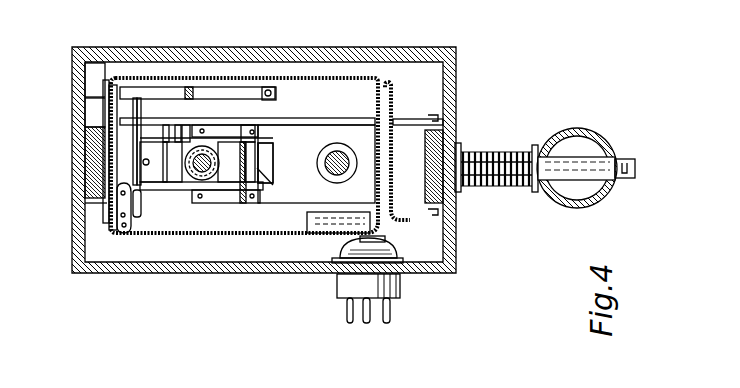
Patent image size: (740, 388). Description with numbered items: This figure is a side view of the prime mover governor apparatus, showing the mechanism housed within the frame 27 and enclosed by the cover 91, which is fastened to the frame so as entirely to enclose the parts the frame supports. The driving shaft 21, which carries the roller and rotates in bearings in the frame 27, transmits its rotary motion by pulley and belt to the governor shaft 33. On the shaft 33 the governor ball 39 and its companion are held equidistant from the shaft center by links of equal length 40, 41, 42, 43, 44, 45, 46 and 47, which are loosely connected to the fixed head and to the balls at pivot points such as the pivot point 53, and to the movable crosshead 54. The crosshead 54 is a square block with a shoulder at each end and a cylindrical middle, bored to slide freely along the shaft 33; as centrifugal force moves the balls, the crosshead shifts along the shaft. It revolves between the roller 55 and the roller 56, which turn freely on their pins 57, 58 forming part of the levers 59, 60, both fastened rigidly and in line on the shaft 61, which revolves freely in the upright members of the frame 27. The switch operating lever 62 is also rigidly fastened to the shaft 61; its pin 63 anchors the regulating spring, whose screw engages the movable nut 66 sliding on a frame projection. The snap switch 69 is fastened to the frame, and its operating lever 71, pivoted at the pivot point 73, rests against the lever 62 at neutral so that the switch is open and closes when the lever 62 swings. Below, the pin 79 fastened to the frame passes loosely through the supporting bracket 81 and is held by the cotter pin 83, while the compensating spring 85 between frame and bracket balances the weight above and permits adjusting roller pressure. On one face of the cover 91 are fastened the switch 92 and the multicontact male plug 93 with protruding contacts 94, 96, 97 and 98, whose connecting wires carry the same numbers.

The shaft 21 is at (326, 158).
The frame 27 is at (92, 160).
The shaft 33 is at (212, 160).
The governor ball 39 is at (274, 158).
The link 40 is at (150, 186).
The link 41 is at (163, 186).
The link 42 is at (228, 197).
The link 43 is at (241, 197).
The link 44 is at (144, 140).
The link 45 is at (152, 140).
The link 46 is at (230, 135).
The link 47 is at (243, 135).
The pivot point 53 is at (166, 142).
The movable crosshead 54 is at (178, 142).
The roller 56 is at (186, 142).
The roller 55 is at (192, 191).
The pin 57 is at (204, 200).
The pin 58 is at (205, 131).
The lever 59 is at (216, 203).
The lever 60 is at (214, 133).
The shaft 61 is at (272, 172).
The switch operating lever 62 is at (232, 87).
The pin 63 is at (268, 87).
The movable nut 66 is at (94, 80).
The snap switch 69 is at (116, 230).
The operating lever 71 is at (96, 151).
The pivot point 73 is at (131, 221).
The pin 79 is at (562, 158).
The supporting bracket 81 is at (580, 132).
The cotter pin 83 is at (622, 159).
The compensating spring 85 is at (512, 150).
The cover 91 is at (234, 270).
The switch 92 is at (312, 258).
The male plug 93 is at (337, 290).
The contact 94 is at (405, 225).
The contact 96 is at (146, 76).
The contact 97 is at (263, 233).
The contact 98 is at (120, 76).